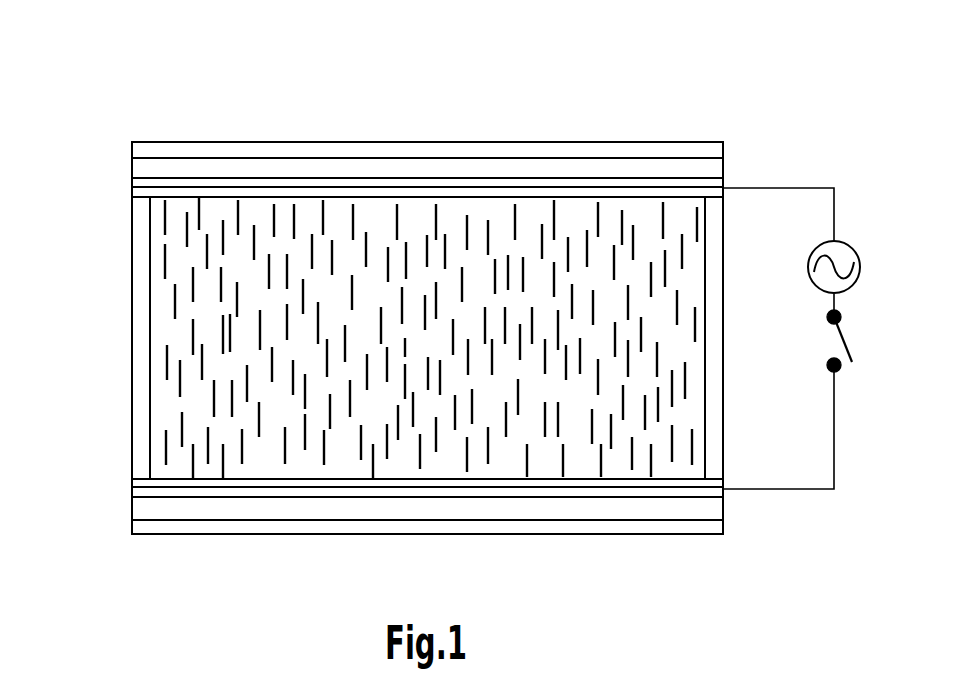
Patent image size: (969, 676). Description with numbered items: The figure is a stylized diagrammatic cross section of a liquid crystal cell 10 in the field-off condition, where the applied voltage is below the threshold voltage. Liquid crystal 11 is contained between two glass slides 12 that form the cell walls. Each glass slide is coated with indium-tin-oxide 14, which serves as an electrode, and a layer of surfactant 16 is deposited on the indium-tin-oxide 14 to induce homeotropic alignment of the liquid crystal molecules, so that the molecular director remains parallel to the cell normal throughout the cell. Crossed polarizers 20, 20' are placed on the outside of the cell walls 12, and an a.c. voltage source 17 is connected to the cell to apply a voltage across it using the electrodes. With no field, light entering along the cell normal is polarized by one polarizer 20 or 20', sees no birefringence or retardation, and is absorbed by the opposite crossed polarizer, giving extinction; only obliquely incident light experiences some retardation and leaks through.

The liquid crystal cell 10 is at (597, 88).
The liquid crystal 11 is at (662, 442).
The glass slides 12 is at (205, 167).
The indium-tin-oxide (ITO) 14 is at (148, 183).
The surfactant layer 16 is at (142, 193).
The a.c. voltage source 17 is at (843, 241).
The polarizer 20 is at (427, 126).
The polarizer 20' is at (427, 576).